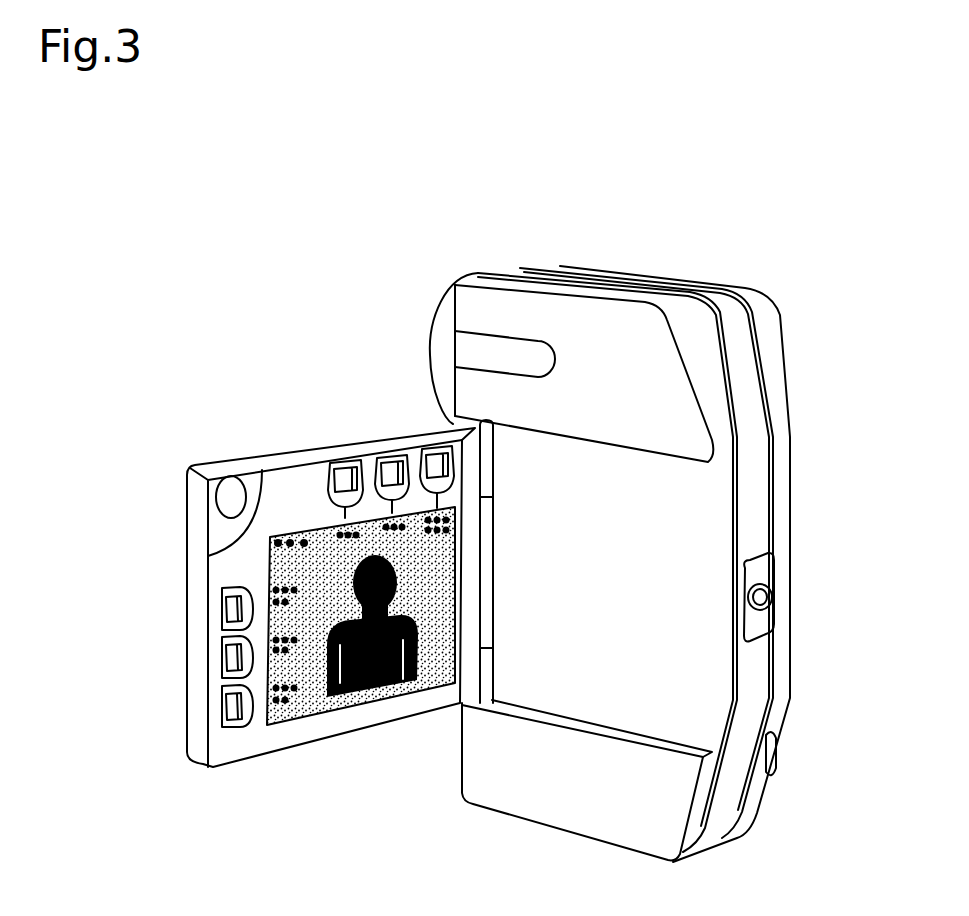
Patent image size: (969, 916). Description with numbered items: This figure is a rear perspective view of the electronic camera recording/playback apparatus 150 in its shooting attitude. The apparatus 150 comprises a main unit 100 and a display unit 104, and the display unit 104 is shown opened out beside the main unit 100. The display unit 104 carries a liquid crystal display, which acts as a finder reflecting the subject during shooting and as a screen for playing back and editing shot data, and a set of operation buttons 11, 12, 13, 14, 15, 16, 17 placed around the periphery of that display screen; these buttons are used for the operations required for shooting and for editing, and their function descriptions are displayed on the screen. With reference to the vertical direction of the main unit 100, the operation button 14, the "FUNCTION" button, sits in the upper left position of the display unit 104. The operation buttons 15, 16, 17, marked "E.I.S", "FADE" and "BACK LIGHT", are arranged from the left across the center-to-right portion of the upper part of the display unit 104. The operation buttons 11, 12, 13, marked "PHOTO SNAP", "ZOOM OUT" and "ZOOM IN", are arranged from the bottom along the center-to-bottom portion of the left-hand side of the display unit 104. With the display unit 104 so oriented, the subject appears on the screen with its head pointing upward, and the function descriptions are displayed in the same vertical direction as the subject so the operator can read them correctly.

The operation button 11 is at (267, 698).
The operation button 12 is at (267, 649).
The operation button 13 is at (267, 602).
The operation button 14 is at (230, 487).
The operation button 15 is at (340, 470).
The operation button 16 is at (387, 465).
The operation button 17 is at (433, 462).
The display unit 104 is at (230, 568).
The main unit 100 is at (768, 382).
The electronic camera recording/playback apparatus 150 is at (811, 328).